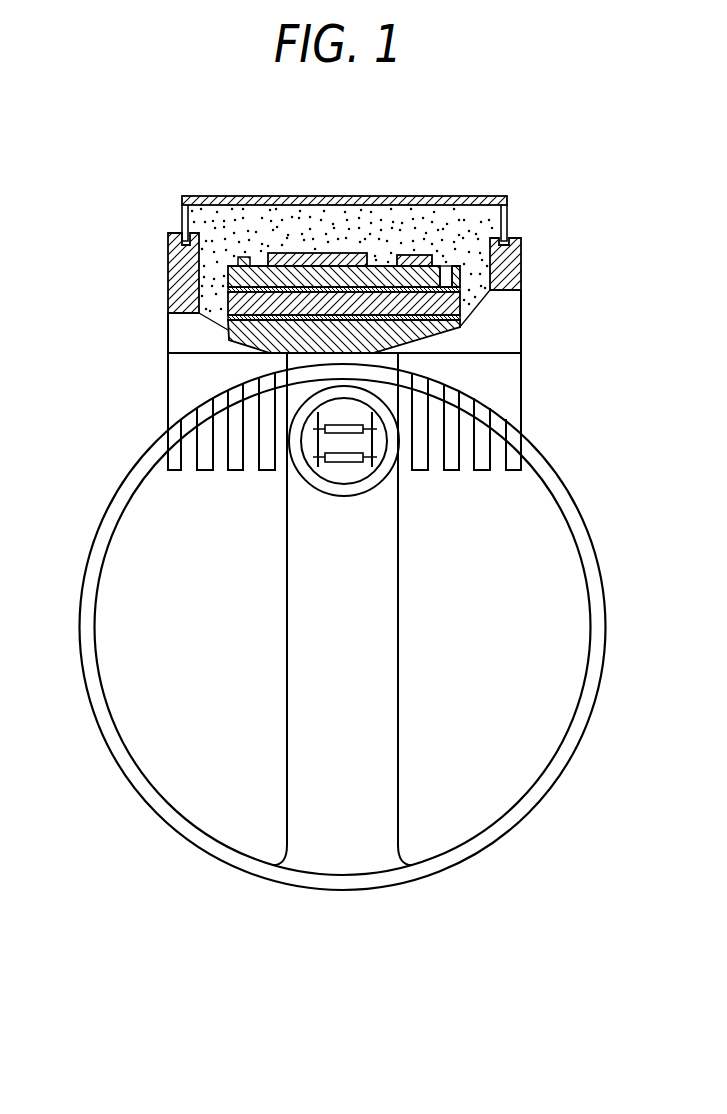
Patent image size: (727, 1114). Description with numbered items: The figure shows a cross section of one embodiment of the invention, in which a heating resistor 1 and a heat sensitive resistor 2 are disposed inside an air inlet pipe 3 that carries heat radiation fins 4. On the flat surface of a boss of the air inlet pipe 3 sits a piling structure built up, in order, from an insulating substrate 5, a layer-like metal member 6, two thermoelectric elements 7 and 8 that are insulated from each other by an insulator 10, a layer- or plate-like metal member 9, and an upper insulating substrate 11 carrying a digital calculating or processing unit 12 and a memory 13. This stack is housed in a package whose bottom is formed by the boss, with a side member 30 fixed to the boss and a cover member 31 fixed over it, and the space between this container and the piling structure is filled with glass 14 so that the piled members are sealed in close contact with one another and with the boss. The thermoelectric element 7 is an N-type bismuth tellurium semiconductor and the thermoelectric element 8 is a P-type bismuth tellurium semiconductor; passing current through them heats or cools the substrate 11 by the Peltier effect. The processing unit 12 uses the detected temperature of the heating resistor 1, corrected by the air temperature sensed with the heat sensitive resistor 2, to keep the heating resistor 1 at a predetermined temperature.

The heating resistor 1 is at (318, 428).
The heat sensitive resistor 2 is at (333, 461).
The air inlet pipe 3 is at (152, 806).
The heat radiation fins 4 is at (452, 444).
The insulating substrate 5 is at (457, 333).
The layer-like metal member 6 is at (228, 323).
The thermoelectric element 7 is at (227, 310).
The thermoelectric element 8 is at (463, 319).
The layer- or plate-like metal member 9 is at (258, 252).
The insulator 10 is at (352, 262).
The insulating substrate 11 is at (437, 267).
The digital calculating or processing unit 12 is at (292, 253).
The memory 13 is at (417, 255).
The glass 14 is at (332, 212).
The side member 30 is at (523, 250).
The cover member 31 is at (184, 220).